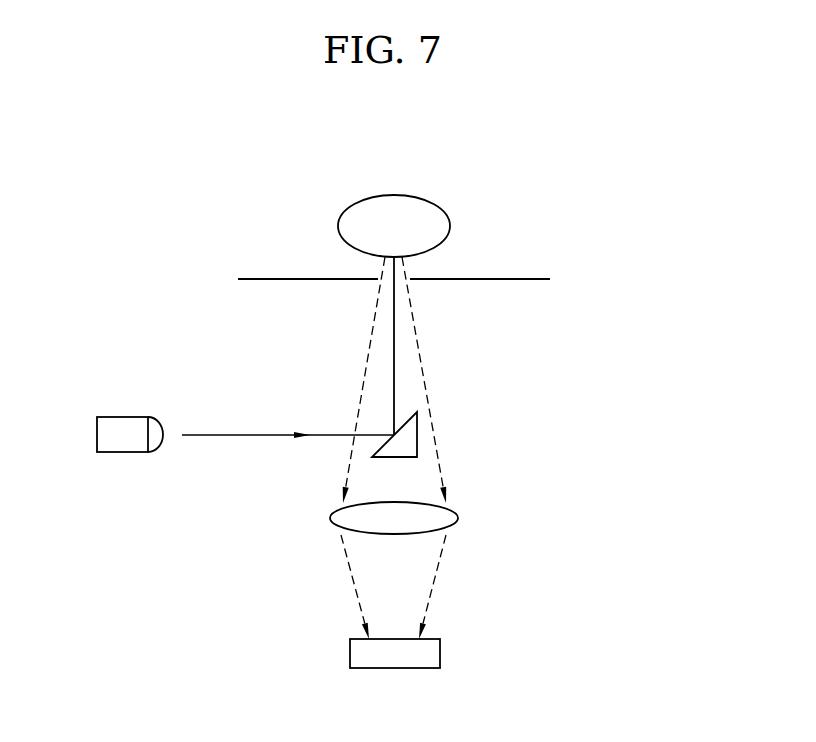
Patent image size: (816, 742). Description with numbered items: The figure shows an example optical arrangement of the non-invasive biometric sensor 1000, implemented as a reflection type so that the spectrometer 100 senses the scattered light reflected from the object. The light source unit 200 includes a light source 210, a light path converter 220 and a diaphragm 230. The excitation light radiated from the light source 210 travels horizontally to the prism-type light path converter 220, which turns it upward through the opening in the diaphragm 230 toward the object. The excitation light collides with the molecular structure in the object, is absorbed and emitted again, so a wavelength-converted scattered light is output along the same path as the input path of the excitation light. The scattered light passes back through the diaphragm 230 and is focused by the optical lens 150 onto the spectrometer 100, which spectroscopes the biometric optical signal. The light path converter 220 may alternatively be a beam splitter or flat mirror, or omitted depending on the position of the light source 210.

The non-invasive biometric sensor 1000 is at (573, 186).
The light source unit 200 is at (200, 362).
The light source 210 is at (123, 452).
The light path converter 220 is at (413, 438).
The diaphragm 230 is at (522, 279).
The optical lens 150 is at (457, 518).
The spectrometer 100 is at (440, 653).